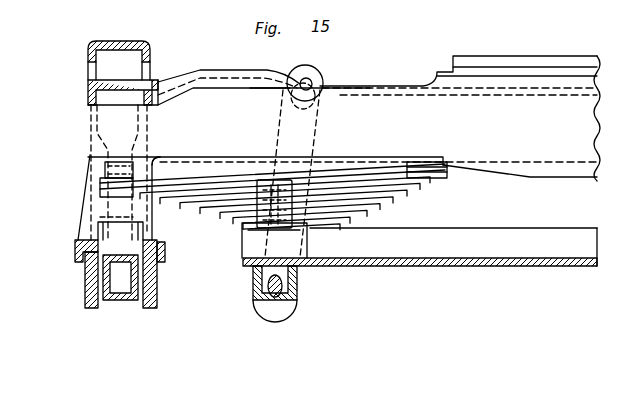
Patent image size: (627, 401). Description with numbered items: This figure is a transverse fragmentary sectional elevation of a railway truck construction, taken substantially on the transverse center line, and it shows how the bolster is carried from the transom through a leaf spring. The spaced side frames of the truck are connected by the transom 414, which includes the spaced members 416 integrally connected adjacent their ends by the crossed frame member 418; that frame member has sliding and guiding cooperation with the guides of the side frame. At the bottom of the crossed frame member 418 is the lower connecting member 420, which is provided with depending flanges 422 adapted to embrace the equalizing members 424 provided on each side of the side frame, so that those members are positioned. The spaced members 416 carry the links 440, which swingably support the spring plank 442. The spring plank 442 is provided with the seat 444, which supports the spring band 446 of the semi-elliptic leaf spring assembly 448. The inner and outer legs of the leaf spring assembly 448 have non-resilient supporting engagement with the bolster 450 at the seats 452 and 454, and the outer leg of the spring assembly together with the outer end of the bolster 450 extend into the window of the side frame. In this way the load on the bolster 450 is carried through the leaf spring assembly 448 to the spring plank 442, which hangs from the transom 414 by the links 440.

The transom 414 is at (170, 82).
The spaced members 416 is at (221, 73).
The crossed frame member 418 is at (87, 185).
The lower connecting member 420 is at (79, 238).
The depending flanges 422 is at (75, 251).
The equalizing members 424 is at (85, 282).
The links 440 is at (317, 75).
The spring plank 442 is at (400, 253).
The seat 444 is at (310, 245).
The spring band 446 is at (268, 188).
The semi-elliptic leaf spring assembly 448 is at (387, 202).
The bolster 450 is at (390, 92).
The seat 452 is at (445, 170).
The seat 454 is at (108, 167).